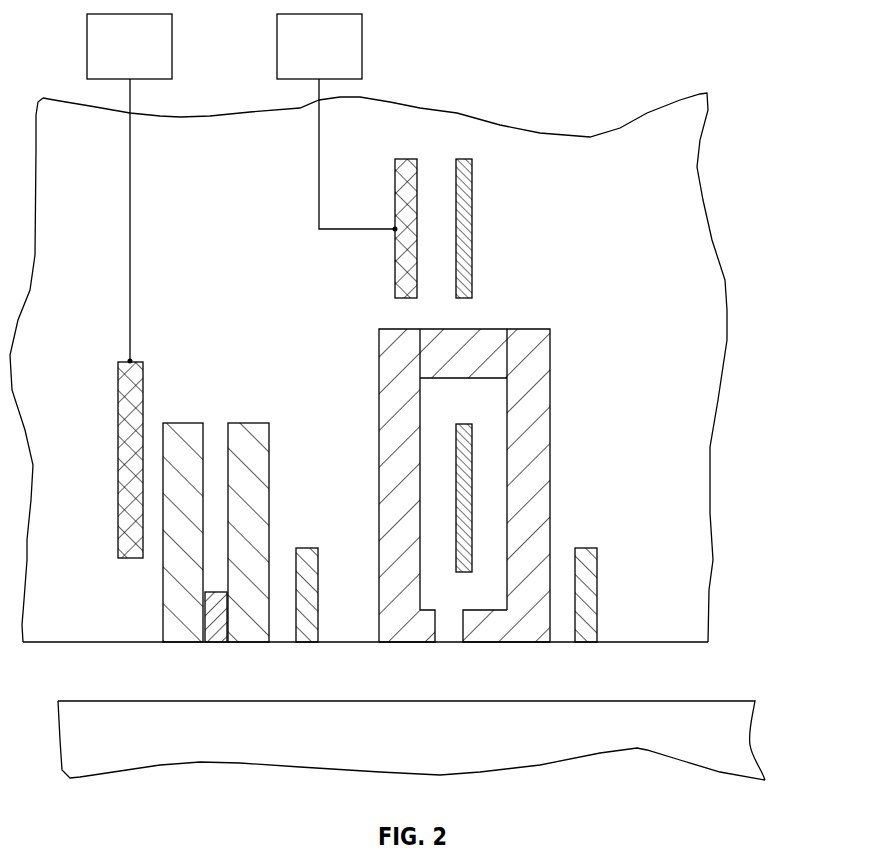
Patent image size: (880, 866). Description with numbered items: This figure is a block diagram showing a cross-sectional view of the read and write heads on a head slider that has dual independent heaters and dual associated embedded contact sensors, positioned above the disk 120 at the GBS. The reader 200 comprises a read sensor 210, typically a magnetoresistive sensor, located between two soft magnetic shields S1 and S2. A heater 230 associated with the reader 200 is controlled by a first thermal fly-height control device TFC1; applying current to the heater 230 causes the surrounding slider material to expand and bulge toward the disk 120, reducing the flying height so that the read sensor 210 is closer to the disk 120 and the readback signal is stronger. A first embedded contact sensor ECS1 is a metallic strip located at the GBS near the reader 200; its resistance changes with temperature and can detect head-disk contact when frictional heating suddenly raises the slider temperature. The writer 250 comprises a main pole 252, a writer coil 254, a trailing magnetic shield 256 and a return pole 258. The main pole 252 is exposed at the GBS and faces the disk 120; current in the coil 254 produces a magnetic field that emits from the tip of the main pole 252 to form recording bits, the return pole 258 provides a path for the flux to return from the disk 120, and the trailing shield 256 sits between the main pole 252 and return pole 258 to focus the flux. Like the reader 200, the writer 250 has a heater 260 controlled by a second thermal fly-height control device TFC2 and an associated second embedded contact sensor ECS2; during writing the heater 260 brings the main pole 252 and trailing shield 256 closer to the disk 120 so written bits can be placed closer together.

The disk 120 is at (740, 737).
The reader 200 is at (221, 499).
The read sensor 210 is at (217, 643).
The heater 230 is at (128, 460).
The writer 250 is at (492, 490).
The main pole 252 is at (400, 643).
The writer coil 254 is at (468, 240).
The trailing magnetic shield 256 is at (485, 643).
The return pole 258 is at (538, 448).
The heater 260 is at (392, 279).
The soft magnetic shield S1 is at (182, 423).
The soft magnetic shield S2 is at (248, 423).
The first embedded contact sensor ECS1 is at (304, 548).
The second embedded contact sensor ECS2 is at (585, 548).
The first thermal fly-height control device TFC1 is at (129, 189).
The second thermal fly-height control device TFC2 is at (337, 123).
The gas bearing surface GBS is at (667, 644).